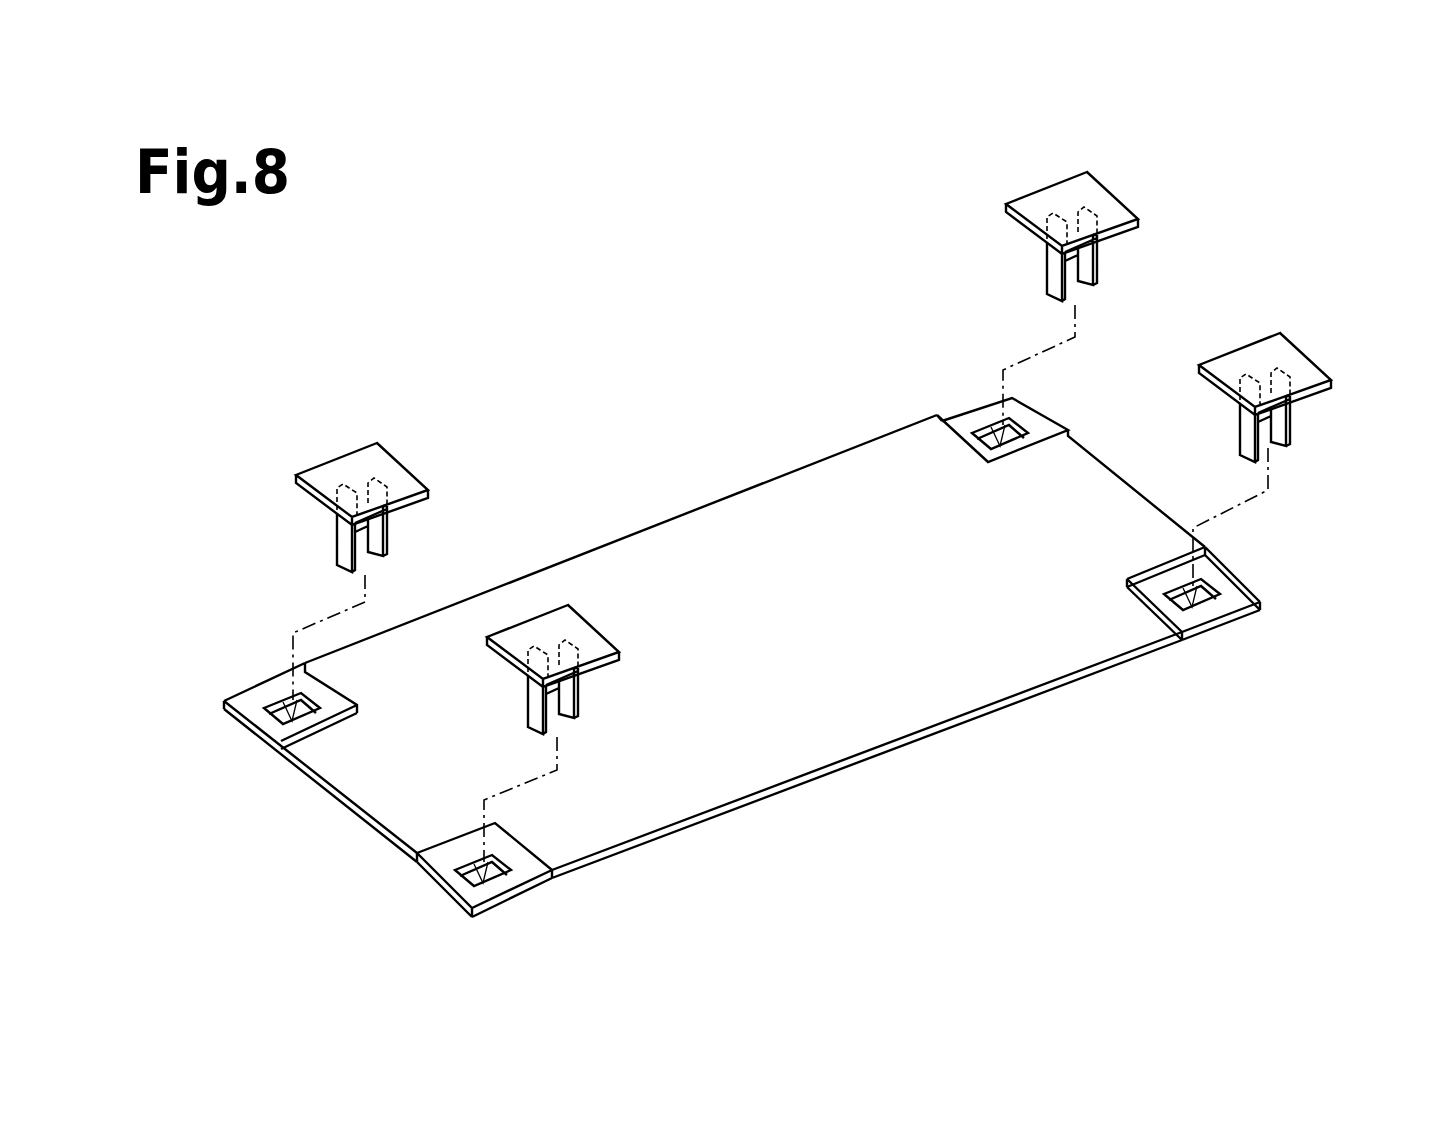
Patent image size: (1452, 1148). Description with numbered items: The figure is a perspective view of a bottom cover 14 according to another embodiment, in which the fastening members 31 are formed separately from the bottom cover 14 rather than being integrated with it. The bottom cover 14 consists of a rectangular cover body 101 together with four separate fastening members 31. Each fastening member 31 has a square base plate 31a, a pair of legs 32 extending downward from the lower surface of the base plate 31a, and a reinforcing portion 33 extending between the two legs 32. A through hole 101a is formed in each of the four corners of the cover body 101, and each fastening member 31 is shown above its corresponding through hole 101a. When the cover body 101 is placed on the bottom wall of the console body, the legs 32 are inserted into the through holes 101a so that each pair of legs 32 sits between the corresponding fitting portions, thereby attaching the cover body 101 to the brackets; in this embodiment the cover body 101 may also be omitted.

The bottom cover 14 is at (737, 594).
The cover body 101 is at (737, 663).
The through hole 101a is at (275, 702).
The fastening member 31 is at (848, 489).
The base plate 31a is at (408, 477).
The legs 32 is at (345, 545).
The reinforcing portion 33 is at (363, 538).